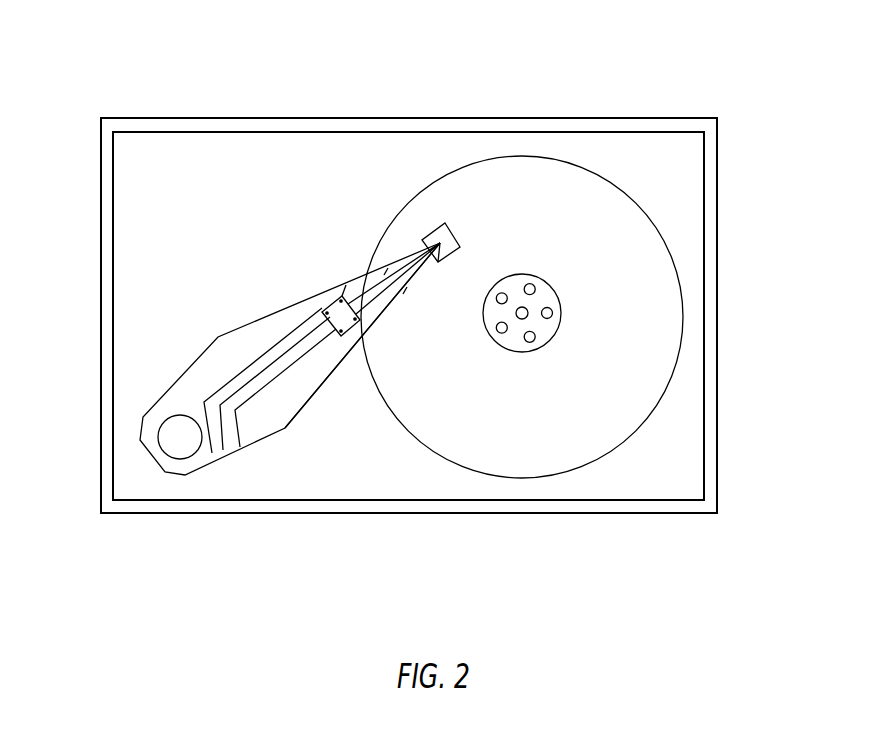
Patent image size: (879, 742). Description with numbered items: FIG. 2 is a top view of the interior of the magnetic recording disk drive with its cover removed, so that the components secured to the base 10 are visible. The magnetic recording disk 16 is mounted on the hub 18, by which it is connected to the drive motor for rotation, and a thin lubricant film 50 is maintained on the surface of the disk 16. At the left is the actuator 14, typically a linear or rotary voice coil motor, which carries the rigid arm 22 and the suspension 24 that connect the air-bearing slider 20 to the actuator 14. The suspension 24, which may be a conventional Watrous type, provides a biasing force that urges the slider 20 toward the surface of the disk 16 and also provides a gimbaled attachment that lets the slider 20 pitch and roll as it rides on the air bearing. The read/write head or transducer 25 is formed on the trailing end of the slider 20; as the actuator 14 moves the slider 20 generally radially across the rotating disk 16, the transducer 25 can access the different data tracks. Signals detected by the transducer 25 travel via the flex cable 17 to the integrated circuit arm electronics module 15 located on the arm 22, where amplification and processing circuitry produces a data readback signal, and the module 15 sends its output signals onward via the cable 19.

The base 10 is at (718, 183).
The actuator 14 is at (173, 453).
The arm electronics module 15 is at (337, 307).
The magnetic recording disk 16 is at (658, 407).
The flex cable 17 is at (342, 296).
The hub 18 is at (553, 299).
The cable 19 is at (242, 397).
The air-bearing slider 20 is at (440, 228).
The rigid arm 22 is at (188, 384).
The suspension 24 is at (362, 340).
The read/write head or transducer 25 is at (437, 265).
The thin lubricant film 50 is at (550, 173).